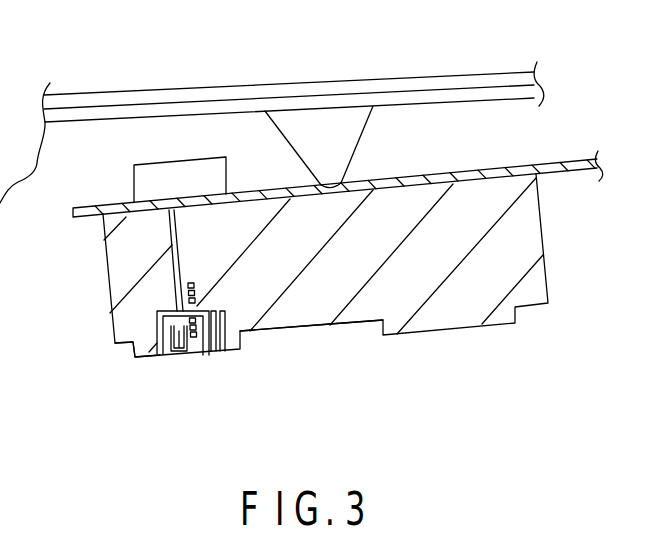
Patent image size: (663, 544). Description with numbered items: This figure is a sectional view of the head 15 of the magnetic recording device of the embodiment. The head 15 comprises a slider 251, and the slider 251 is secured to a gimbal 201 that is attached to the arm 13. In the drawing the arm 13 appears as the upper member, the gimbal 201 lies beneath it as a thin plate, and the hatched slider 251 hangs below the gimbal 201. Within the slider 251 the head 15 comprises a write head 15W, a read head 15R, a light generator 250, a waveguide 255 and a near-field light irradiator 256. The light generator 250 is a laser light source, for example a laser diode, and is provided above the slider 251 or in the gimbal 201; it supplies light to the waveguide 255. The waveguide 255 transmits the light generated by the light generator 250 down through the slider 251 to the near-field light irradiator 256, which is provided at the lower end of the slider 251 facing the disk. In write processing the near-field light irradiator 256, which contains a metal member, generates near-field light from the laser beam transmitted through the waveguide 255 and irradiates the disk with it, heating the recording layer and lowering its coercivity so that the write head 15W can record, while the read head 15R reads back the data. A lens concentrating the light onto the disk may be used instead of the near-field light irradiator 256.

The arm 13 is at (459, 75).
The gimbal 201 is at (577, 160).
The light generator 250 is at (142, 182).
The waveguide 255 is at (177, 272).
The near-field light irradiator 256 is at (183, 354).
The slider 251 is at (274, 326).
The head 15 is at (453, 353).
The write head 15W is at (139, 375).
The read head 15R is at (225, 333).